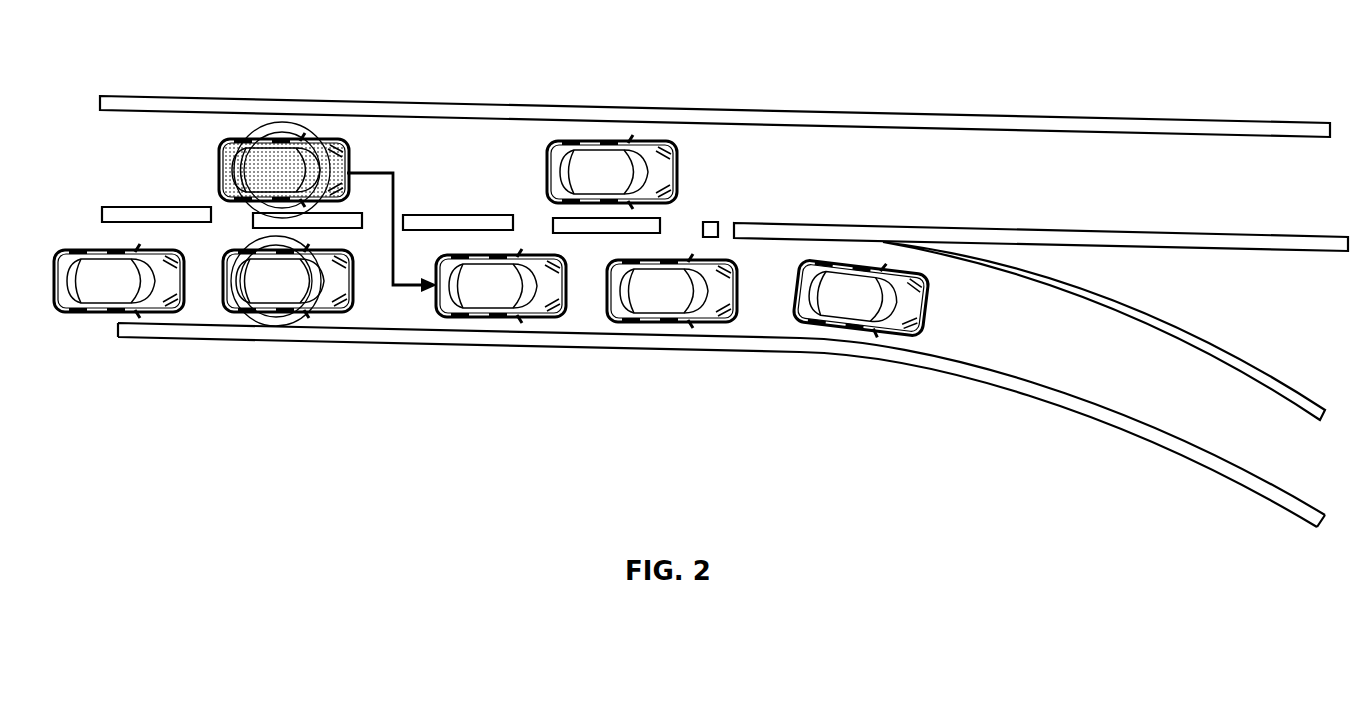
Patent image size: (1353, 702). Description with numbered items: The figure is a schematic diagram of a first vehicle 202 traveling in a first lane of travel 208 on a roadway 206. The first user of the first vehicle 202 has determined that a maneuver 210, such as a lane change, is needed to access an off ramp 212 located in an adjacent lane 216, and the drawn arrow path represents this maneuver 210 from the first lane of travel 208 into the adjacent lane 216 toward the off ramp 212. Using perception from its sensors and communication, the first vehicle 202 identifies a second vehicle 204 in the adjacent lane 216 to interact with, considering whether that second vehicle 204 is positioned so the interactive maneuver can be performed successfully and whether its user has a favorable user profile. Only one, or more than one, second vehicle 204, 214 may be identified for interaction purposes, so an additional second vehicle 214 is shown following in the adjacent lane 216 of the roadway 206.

The first vehicle 202 is at (312, 137).
The second vehicle 204 is at (278, 320).
The roadway 206 is at (1013, 114).
The first lane of travel 208 is at (773, 177).
The maneuver 210 is at (384, 170).
The off ramp 212 is at (1003, 360).
The second vehicle 214 is at (73, 313).
The adjacent lane 216 is at (583, 315).